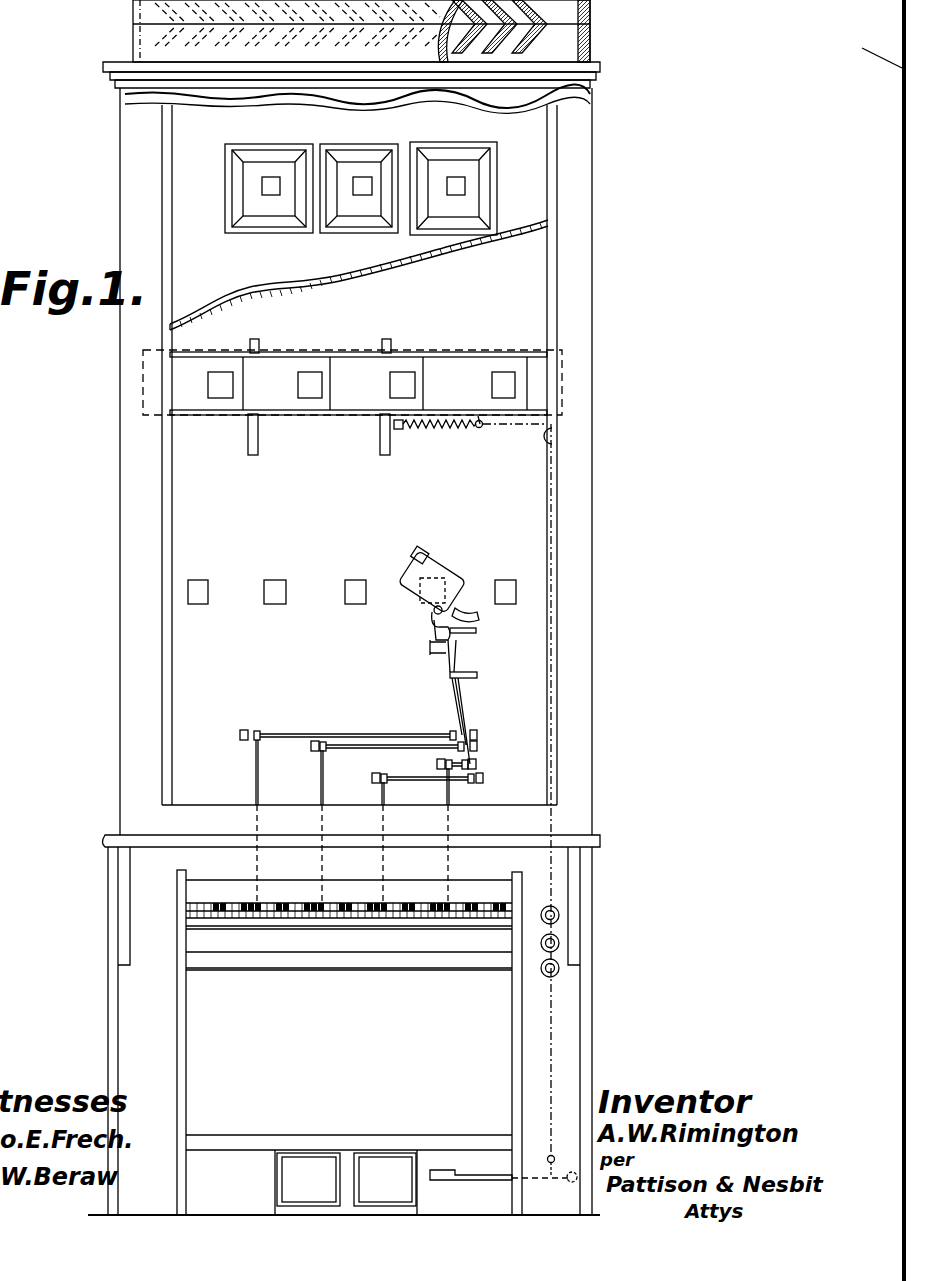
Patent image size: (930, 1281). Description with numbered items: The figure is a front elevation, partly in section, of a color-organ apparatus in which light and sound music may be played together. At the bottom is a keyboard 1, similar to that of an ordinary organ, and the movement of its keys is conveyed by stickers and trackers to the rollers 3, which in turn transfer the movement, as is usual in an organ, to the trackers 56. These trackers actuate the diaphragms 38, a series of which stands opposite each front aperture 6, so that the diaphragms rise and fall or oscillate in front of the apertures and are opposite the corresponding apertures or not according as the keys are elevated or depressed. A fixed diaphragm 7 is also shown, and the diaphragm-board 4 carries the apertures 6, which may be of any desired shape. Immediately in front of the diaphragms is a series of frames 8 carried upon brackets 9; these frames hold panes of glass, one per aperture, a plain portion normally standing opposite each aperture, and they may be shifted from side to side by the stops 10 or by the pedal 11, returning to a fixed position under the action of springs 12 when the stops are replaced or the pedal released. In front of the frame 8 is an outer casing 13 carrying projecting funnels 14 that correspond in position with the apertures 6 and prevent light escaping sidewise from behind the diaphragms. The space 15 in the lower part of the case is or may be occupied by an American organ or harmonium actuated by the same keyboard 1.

The keyboard 1 is at (186, 911).
The rollers 3 is at (410, 780).
The sounding board 4 is at (357, 627).
The front apertures 6 is at (520, 592).
The fixed diaphragm 7 is at (432, 562).
The frames 8 is at (345, 418).
The brackets 9 is at (268, 440).
The stops 10 is at (559, 915).
The pedal 11 is at (503, 1168).
The springs 12 is at (473, 785).
The outer casing 13 is at (359, 254).
The projecting funnels 14 is at (448, 226).
The space 15 is at (349, 1059).
The diaphragms 38 is at (452, 600).
The trackers 56 is at (470, 728).